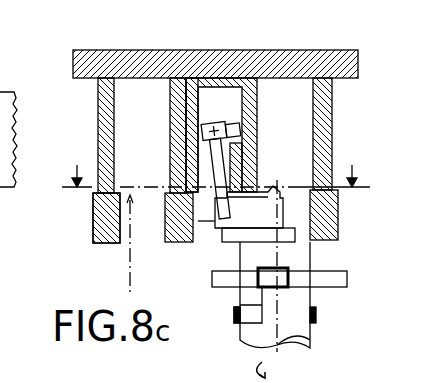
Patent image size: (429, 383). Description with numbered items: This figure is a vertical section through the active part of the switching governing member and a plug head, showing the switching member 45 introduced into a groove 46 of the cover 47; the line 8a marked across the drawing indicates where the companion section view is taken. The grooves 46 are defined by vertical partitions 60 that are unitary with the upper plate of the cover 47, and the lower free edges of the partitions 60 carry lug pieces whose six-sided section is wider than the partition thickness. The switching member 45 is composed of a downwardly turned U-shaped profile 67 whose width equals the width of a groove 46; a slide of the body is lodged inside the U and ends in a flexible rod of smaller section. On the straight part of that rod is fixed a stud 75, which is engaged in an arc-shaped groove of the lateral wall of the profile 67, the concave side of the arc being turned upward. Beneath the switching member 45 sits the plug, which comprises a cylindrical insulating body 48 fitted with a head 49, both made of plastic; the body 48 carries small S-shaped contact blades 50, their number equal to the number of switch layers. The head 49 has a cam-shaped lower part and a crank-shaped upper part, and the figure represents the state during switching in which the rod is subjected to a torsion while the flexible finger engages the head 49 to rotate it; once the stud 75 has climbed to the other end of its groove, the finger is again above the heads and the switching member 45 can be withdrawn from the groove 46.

The cover 47 is at (244, 49).
The vertical partition 60 is at (98, 107).
The groove 46 is at (158, 133).
The switching member 45 is at (172, 154).
The stud 75 is at (246, 136).
The U-shaped profile 67 is at (248, 166).
The cylindrical body 48 is at (300, 328).
The head 49 is at (210, 222).
The contact blade 50 is at (234, 318).
The section line 8a— 8a is at (215, 163).